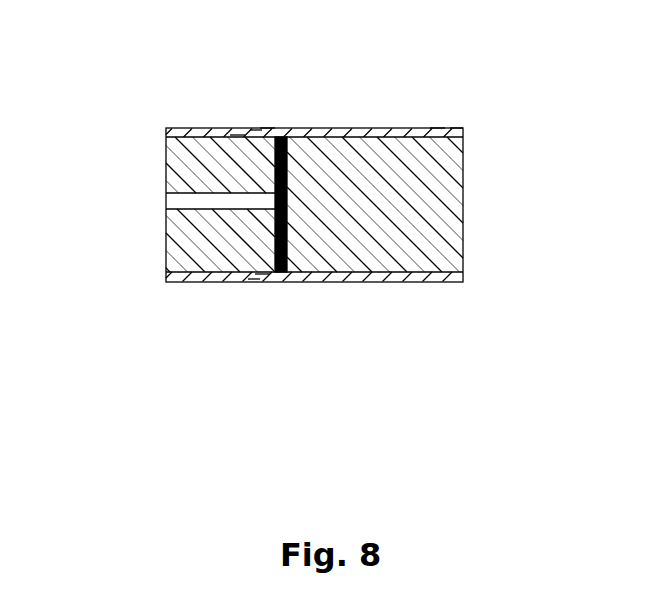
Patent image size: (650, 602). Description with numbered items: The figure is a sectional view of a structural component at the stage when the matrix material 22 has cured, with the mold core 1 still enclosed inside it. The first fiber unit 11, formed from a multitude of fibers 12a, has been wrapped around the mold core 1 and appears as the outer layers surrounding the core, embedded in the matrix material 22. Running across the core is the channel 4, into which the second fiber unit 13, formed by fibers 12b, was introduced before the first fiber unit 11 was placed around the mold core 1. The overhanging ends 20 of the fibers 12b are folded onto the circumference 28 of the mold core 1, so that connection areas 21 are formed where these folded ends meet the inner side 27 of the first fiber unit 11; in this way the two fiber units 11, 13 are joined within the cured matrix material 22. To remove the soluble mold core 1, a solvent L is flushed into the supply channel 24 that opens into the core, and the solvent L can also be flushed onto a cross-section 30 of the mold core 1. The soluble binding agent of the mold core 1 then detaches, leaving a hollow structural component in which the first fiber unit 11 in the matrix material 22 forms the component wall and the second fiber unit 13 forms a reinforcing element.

The mold core 1 is at (319, 248).
The channel 4 is at (319, 260).
The first fiber unit 11 is at (314, 81).
The fibers 12a is at (457, 72).
The fibers 12b is at (292, 74).
The second fiber unit 13 is at (293, 327).
The overhanging ends 20 is at (225, 201).
The connection areas 21 is at (208, 221).
The matrix material 22 is at (485, 87).
The supply channel 24 is at (174, 200).
The inner side 27 is at (314, 149).
The circumference 28 is at (164, 129).
The cross-section 30 is at (375, 258).
The solvent L is at (163, 200).